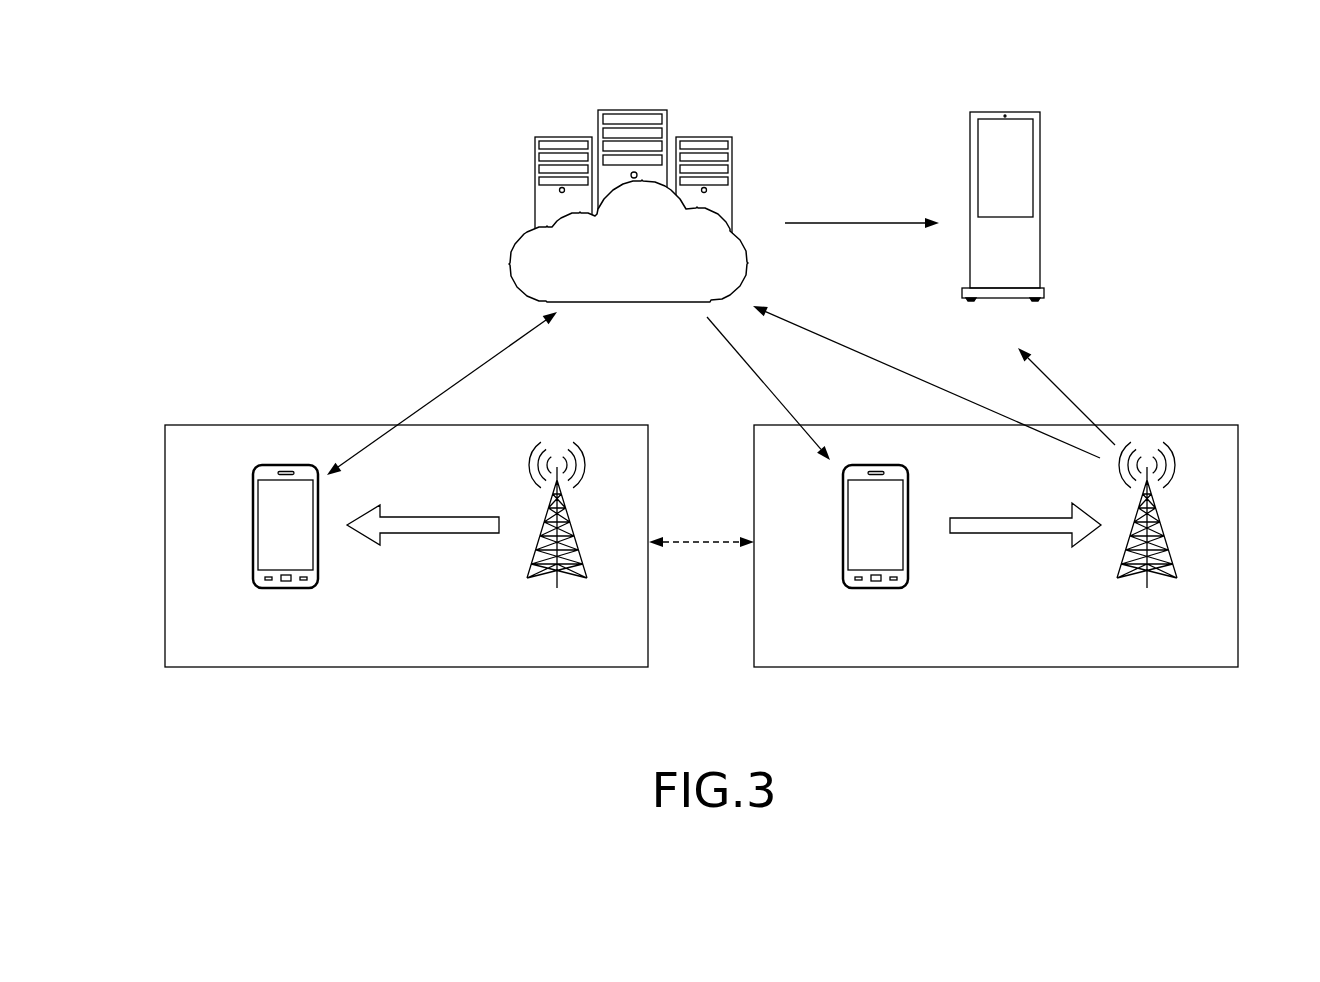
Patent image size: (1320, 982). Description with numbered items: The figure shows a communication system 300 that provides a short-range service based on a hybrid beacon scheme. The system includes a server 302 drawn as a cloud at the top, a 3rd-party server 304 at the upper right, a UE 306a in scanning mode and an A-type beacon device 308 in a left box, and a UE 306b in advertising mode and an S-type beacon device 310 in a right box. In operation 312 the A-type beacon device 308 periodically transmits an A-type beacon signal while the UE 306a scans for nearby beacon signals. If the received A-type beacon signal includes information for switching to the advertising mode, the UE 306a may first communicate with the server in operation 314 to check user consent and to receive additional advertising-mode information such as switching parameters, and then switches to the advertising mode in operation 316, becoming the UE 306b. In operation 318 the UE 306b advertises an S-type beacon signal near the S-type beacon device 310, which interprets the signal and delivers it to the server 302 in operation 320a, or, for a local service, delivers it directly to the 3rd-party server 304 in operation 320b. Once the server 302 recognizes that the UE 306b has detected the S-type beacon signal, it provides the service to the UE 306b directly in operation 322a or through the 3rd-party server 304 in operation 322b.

The communication system 300 is at (438, 111).
The server 302 is at (634, 110).
The 3rd-party server 304 is at (1005, 112).
The UE in scanning mode 306a is at (253, 527).
The UE in advertising mode 306b is at (843, 527).
The A-type beacon device 308 is at (576, 527).
The S-type beacon device 310 is at (1165, 527).
The A-type beacon signal transmission operation 312 is at (437, 516).
The server communication operation 314 is at (460, 380).
The advertising mode switching operation 316 is at (700, 540).
The S-type beacon signal advertising operation 318 is at (1027, 516).
The delivery operation to server 320a is at (890, 367).
The delivery operation to 3rd-party server 320b is at (1070, 398).
The direct service provision operation 322a is at (752, 369).
The service delivery operation via 3rd-party server 322b is at (865, 222).